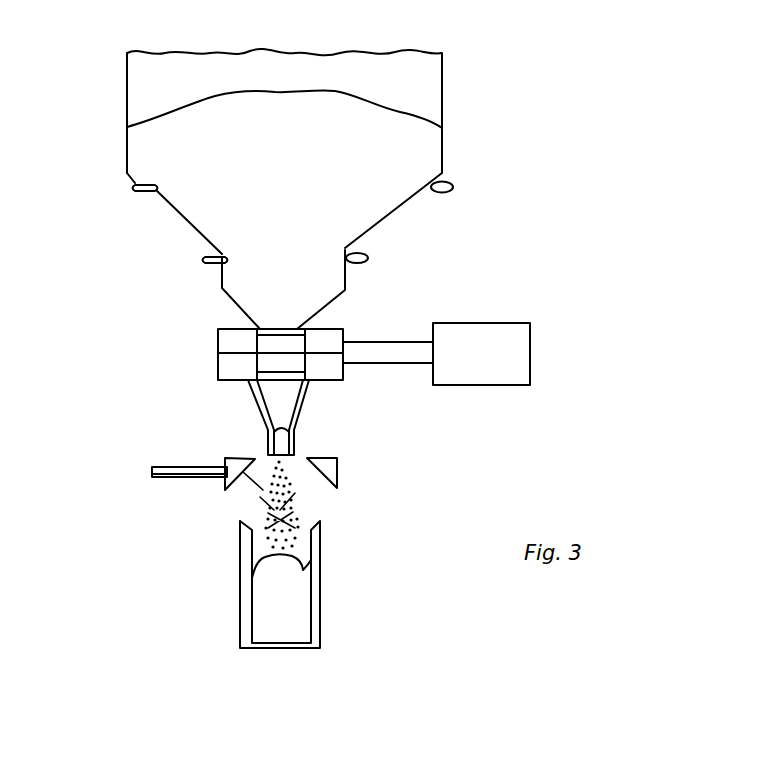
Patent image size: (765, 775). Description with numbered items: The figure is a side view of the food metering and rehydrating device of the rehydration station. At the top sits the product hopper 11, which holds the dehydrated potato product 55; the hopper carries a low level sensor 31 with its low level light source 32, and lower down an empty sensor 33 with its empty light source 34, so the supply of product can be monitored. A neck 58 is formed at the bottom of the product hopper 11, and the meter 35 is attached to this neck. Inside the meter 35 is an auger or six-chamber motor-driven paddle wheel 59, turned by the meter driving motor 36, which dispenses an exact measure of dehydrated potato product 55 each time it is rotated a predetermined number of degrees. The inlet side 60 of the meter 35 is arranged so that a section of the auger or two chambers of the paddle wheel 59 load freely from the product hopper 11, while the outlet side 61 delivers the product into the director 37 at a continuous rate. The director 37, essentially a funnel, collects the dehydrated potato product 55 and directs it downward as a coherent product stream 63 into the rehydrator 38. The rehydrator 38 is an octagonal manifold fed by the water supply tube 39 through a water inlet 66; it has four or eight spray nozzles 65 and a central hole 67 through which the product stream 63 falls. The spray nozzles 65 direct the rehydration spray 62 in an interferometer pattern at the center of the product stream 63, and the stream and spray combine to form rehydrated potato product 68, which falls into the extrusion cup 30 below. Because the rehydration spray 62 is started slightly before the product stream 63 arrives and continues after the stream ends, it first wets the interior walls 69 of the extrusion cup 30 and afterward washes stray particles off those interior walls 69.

The product hopper 11 is at (448, 85).
The dehydrated potato product 55 is at (304, 141).
The low level sensor 31 is at (140, 194).
The low level light source 32 is at (455, 187).
The empty sensor 33 is at (204, 262).
The empty light source 34 is at (368, 256).
The meter 35 is at (216, 340).
The meter driving motor 36 is at (492, 386).
The director 37 is at (252, 400).
The rehydrator 38 is at (236, 452).
The water supply tube 39 is at (169, 466).
The neck 58 is at (347, 297).
The paddle wheel 59 is at (283, 344).
The inlet side 60 is at (267, 326).
The outlet side 61 is at (289, 380).
The rehydration spray 62 is at (306, 503).
The product stream 63 is at (253, 492).
The spray nozzles 65 is at (243, 472).
The water inlet 66 is at (222, 476).
The central hole 67 is at (301, 476).
The extrusion cup 30 is at (322, 535).
The rehydrated potato product 68 is at (260, 602).
The interior walls 69 is at (305, 562).